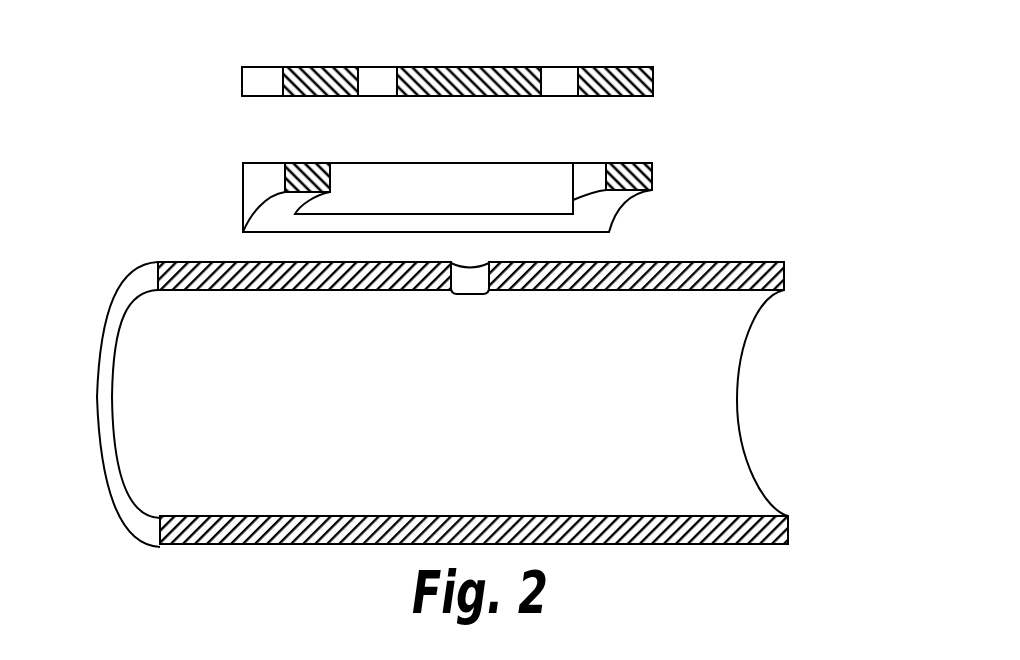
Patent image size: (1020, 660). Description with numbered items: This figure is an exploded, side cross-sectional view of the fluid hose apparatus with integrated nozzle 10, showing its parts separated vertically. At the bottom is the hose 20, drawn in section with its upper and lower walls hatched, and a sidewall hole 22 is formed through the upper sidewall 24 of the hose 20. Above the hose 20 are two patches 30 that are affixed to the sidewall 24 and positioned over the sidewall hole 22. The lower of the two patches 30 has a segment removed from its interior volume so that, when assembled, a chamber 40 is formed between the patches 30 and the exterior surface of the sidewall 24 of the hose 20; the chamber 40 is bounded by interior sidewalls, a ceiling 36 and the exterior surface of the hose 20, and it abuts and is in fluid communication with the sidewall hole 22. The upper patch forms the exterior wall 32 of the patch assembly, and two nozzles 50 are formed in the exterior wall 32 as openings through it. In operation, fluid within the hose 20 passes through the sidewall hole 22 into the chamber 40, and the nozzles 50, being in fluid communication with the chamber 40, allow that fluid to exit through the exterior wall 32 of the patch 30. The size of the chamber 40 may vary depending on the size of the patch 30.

The fluid hose apparatus with integrated nozzle 10 is at (774, 208).
The hose 20 is at (417, 368).
The sidewall hole 22 is at (467, 290).
The sidewall 24 is at (673, 262).
The patch 30 is at (654, 74).
The exterior wall 32 is at (472, 67).
The ceiling 36 is at (275, 113).
The chamber 40 is at (437, 190).
The nozzle 50 is at (377, 80).